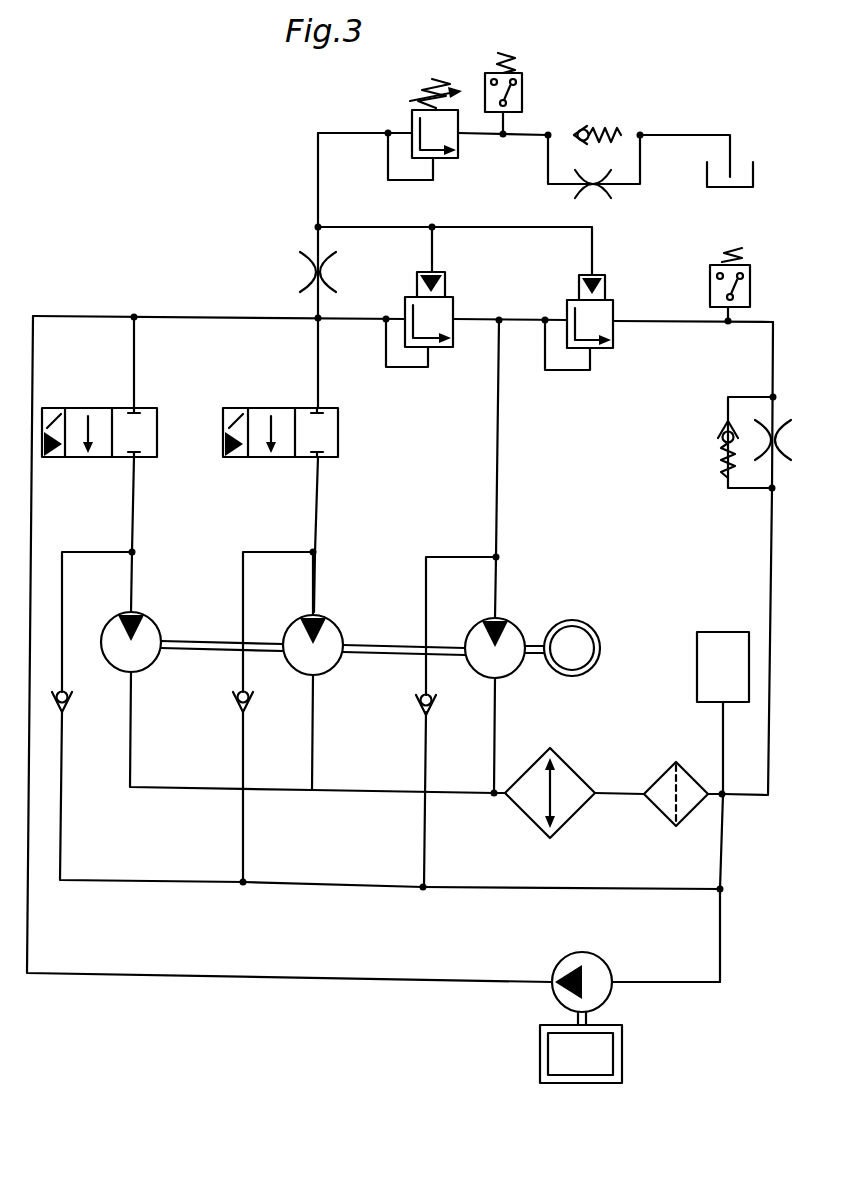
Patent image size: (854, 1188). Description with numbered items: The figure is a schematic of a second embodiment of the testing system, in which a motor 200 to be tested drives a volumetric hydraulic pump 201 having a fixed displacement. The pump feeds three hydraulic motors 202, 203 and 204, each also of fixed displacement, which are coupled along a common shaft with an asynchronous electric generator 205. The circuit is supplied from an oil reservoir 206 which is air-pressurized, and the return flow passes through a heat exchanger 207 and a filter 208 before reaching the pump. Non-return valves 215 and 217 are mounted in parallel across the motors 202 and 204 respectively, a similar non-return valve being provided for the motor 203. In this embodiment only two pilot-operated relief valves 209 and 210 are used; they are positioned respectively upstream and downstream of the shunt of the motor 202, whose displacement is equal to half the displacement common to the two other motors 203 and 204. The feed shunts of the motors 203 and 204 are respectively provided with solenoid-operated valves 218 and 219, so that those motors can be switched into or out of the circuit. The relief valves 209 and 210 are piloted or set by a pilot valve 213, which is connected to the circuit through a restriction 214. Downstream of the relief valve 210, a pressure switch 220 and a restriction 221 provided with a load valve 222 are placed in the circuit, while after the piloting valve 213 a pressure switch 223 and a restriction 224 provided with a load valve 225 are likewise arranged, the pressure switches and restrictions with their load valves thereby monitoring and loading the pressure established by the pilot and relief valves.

The motor to be tested 200 is at (558, 1053).
The volumetric hydraulic pump 201 is at (600, 960).
The hydraulic motor 202 is at (512, 628).
The hydraulic motor 203 is at (338, 627).
The hydraulic motor 204 is at (152, 627).
The asynchronous electric generator 205 is at (592, 629).
The oil reservoir 206 is at (720, 632).
The heat exchanger 207 is at (570, 768).
The filter 208 is at (684, 768).
The pilot-operated relief valve 209 is at (453, 336).
The pilot-operated relief valve 210 is at (613, 334).
The pilot valve 213 is at (412, 117).
The restriction 214 is at (303, 272).
The non-return valve 215 is at (435, 705).
The non-return valve 217 is at (70, 701).
The solenoid-operated valve 218 is at (286, 408).
The solenoid-operated valve 219 is at (104, 408).
The pressure switch 220 is at (750, 280).
The restriction 221 is at (759, 446).
The load valve 222 is at (720, 449).
The pressure switch 223 is at (524, 97).
The restriction 224 is at (598, 191).
The load valve 225 is at (600, 128).